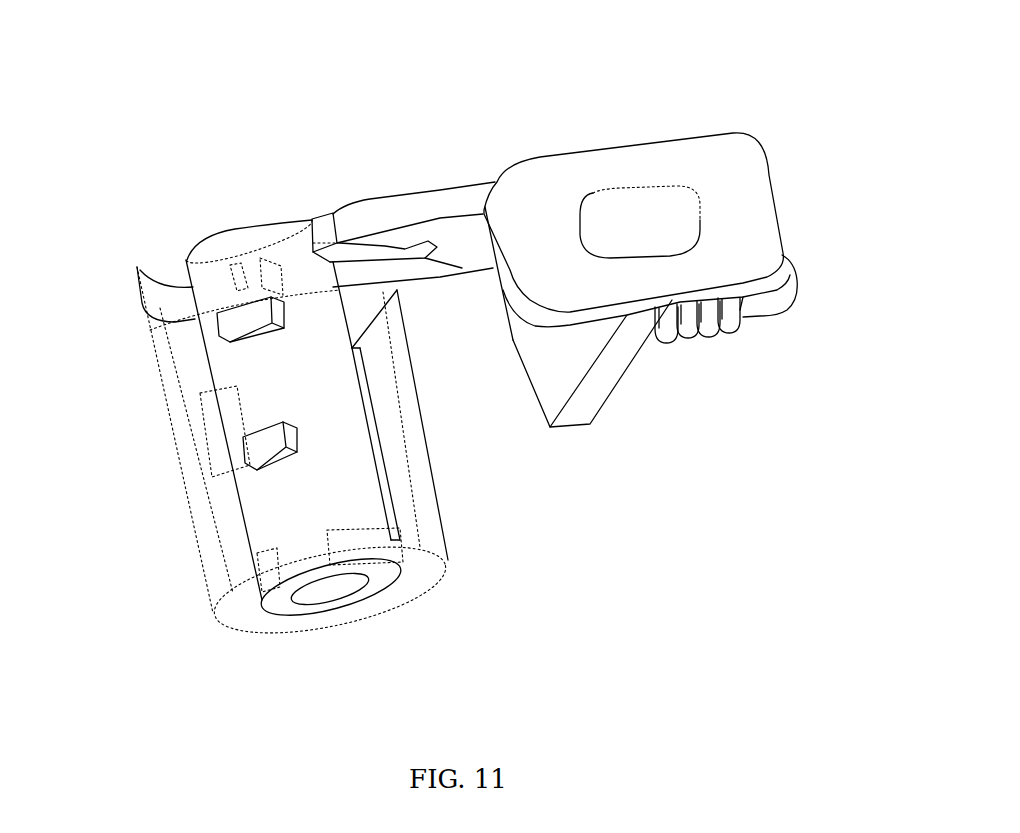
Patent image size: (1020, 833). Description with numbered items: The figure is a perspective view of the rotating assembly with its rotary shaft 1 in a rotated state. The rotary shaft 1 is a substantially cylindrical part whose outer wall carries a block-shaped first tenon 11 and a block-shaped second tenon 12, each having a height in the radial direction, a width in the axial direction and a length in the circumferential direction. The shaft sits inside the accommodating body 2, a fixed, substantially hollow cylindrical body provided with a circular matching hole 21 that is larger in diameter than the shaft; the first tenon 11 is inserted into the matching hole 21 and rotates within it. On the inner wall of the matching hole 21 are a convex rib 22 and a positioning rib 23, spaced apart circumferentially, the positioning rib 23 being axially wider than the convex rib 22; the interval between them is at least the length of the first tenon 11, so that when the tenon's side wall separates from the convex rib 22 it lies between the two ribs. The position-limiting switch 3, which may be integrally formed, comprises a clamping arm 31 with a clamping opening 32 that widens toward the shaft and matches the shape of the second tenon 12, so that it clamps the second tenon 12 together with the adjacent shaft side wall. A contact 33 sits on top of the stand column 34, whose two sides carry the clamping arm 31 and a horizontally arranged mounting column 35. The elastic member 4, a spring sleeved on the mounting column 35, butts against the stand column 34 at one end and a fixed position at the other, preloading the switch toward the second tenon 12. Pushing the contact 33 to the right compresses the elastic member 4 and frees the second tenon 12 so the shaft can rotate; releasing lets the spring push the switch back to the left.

The rotary shaft 1 is at (282, 602).
The accommodating body 2 is at (427, 573).
The position-limiting switch 3 is at (767, 143).
The elastic member 4 is at (727, 323).
The first tenon 11 is at (233, 330).
The second tenon 12 is at (313, 218).
The matching hole 21 is at (362, 602).
The convex rib 22 is at (312, 402).
The positioning rib 23 is at (237, 440).
The clamping arm 31 is at (447, 207).
The clamping opening 32 is at (413, 250).
The contact 33 is at (642, 210).
The stand column 34 is at (590, 402).
The mounting column 35 is at (777, 298).